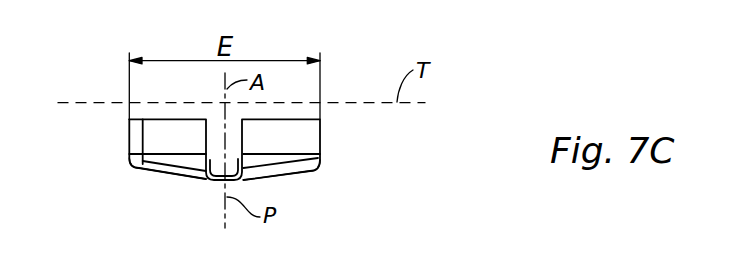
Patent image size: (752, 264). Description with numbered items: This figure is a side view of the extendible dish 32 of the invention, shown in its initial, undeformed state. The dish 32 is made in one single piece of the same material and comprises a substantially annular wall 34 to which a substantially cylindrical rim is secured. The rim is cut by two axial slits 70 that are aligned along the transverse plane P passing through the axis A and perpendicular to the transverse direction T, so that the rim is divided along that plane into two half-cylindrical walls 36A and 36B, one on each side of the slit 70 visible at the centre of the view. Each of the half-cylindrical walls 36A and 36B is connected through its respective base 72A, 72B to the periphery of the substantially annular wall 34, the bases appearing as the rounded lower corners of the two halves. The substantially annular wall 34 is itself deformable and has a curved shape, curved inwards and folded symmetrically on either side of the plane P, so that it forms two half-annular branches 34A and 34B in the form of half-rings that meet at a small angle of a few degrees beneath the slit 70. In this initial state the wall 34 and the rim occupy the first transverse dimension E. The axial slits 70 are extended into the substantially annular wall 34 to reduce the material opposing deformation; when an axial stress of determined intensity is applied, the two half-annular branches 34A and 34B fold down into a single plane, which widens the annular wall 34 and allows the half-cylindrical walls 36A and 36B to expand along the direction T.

The dish 32 is at (335, 139).
The substantially annular wall 34 is at (170, 179).
The half-annular branch 34A is at (190, 179).
The half-annular branch 34B is at (295, 175).
The half-cylindrical wall 36A is at (161, 139).
The half-cylindrical wall 36B is at (308, 145).
The axial slit 70 is at (232, 138).
The base 72A is at (133, 172).
The base 72B is at (315, 170).